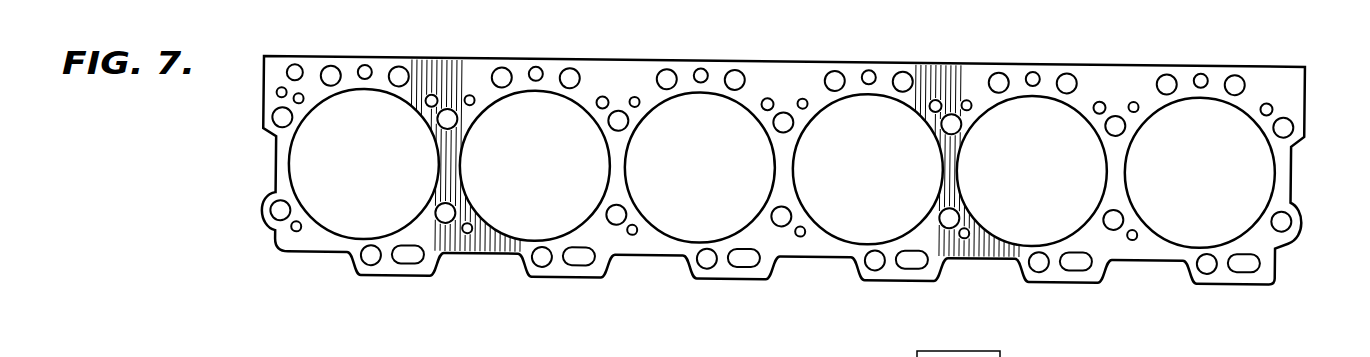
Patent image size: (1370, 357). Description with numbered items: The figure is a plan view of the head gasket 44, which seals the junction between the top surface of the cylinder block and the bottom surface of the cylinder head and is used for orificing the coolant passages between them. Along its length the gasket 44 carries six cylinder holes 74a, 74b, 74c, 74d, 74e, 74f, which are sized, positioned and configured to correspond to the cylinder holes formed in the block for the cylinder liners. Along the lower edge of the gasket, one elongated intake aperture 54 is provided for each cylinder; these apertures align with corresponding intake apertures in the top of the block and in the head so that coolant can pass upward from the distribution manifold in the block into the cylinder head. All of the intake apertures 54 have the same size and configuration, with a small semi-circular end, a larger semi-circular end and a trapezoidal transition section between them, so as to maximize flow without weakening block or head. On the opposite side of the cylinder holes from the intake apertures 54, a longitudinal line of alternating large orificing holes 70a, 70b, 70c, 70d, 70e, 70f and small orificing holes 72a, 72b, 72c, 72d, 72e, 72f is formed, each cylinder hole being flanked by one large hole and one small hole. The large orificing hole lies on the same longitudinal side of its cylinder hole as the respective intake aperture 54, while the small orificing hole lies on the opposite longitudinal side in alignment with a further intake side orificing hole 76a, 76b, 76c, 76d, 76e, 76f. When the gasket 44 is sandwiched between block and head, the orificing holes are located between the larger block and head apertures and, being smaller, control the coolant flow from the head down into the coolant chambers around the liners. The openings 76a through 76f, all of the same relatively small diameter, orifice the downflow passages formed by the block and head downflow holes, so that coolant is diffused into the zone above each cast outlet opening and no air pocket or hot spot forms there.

The head gasket 44 is at (1284, 236).
The intake aperture 54 is at (415, 256).
The large orificing hole 70a is at (1262, 105).
The large orificing hole 70b is at (1095, 105).
The large orificing hole 70c is at (929, 105).
The large orificing hole 70d is at (763, 105).
The large orificing hole 70e is at (598, 105).
The large orificing hole 70f is at (427, 105).
The small orificing hole 72a is at (1136, 93).
The small orificing hole 72b is at (969, 93).
The small orificing hole 72c is at (805, 93).
The small orificing hole 72d is at (637, 93).
The small orificing hole 72e is at (472, 93).
The small orificing hole 72f is at (301, 93).
The cylinder hole 74a is at (1184, 177).
The cylinder hole 74b is at (1016, 177).
The cylinder hole 74c is at (853, 177).
The cylinder hole 74d is at (684, 177).
The cylinder hole 74e is at (519, 177).
The cylinder hole 74f is at (349, 177).
The intake side orificing hole 76a is at (1134, 231).
The intake side orificing hole 76b is at (966, 231).
The intake side orificing hole 76c is at (802, 231).
The intake side orificing hole 76d is at (634, 231).
The intake side orificing hole 76e is at (469, 231).
The intake side orificing hole 76f is at (298, 231).